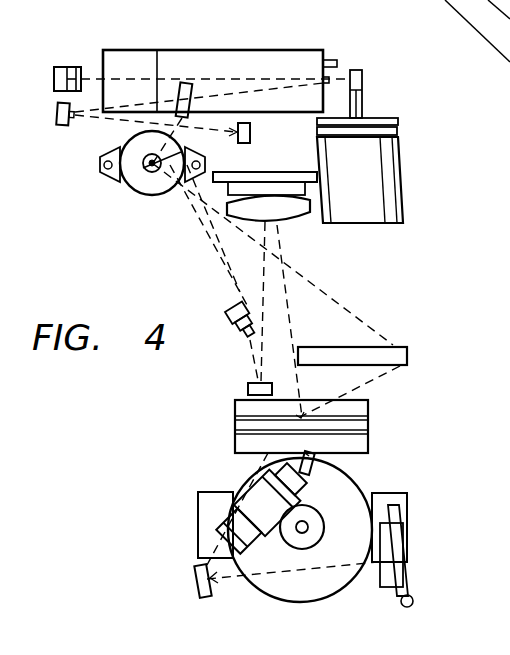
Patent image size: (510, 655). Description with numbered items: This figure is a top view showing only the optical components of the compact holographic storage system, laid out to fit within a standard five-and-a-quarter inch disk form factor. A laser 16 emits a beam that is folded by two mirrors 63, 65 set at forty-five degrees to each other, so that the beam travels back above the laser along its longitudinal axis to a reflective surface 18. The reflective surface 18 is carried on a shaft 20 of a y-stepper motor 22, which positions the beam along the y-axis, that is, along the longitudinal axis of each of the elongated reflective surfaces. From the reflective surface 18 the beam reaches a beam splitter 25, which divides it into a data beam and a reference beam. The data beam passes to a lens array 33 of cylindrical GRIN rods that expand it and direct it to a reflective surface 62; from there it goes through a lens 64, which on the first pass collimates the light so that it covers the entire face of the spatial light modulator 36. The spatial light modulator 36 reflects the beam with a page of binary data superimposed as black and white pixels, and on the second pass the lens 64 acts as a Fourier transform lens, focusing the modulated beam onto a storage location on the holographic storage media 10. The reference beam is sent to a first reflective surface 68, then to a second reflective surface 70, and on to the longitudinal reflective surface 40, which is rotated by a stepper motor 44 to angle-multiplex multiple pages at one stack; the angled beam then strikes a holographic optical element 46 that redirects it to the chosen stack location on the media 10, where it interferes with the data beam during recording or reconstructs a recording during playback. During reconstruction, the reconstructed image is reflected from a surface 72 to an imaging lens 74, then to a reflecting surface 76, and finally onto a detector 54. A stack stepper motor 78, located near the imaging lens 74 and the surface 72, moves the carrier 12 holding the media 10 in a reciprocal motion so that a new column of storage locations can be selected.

The holographic storage media 10 is at (372, 428).
The carrier 12 is at (372, 408).
The laser 16 is at (258, 50).
The reflective surface 18 is at (362, 76).
The shaft 20 is at (362, 106).
The y-stepper motor 22 is at (403, 200).
The beam splitter 25 is at (186, 84).
The lens array 33 is at (232, 313).
The spatial light modulator 36 is at (250, 186).
The reflective surface 40 is at (123, 178).
The stepper motor 44 is at (157, 188).
The holographic optical element 46 is at (408, 355).
The detector 54 is at (383, 546).
The reflective surface 62 is at (248, 388).
The mirror 63 is at (77, 67).
The lens 64 is at (290, 222).
The mirror 65 is at (62, 67).
The first reflective surface 68 is at (60, 126).
The second reflective surface 70 is at (251, 133).
The reflecting surface 72 is at (313, 474).
The imaging lens 74 is at (265, 493).
The reflecting surface 76 is at (197, 584).
The stack stepper motor 78 is at (333, 582).